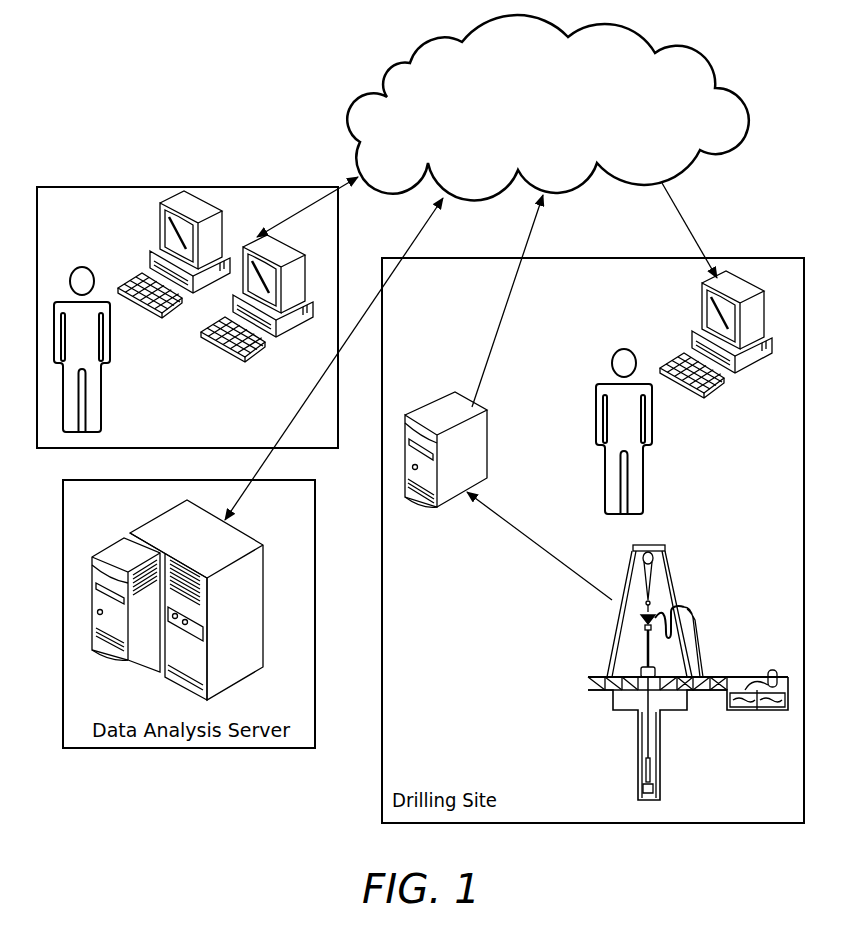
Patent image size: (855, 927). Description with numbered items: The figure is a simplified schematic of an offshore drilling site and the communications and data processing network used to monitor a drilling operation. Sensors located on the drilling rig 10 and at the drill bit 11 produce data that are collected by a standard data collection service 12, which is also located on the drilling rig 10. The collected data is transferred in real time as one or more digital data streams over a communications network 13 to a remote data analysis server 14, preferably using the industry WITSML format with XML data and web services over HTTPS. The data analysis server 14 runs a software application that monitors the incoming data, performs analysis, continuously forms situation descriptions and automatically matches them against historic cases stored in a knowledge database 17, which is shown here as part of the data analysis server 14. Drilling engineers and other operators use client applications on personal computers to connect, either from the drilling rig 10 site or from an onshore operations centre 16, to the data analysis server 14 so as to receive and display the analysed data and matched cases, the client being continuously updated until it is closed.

The drilling rig 10 is at (688, 672).
The drill bit 11 is at (653, 779).
The data collection service 12 is at (486, 408).
The communications network 13 is at (560, 117).
The data analysis server 14 is at (248, 530).
The onshore operations centre 16 is at (94, 184).
The knowledge database 17 is at (112, 655).